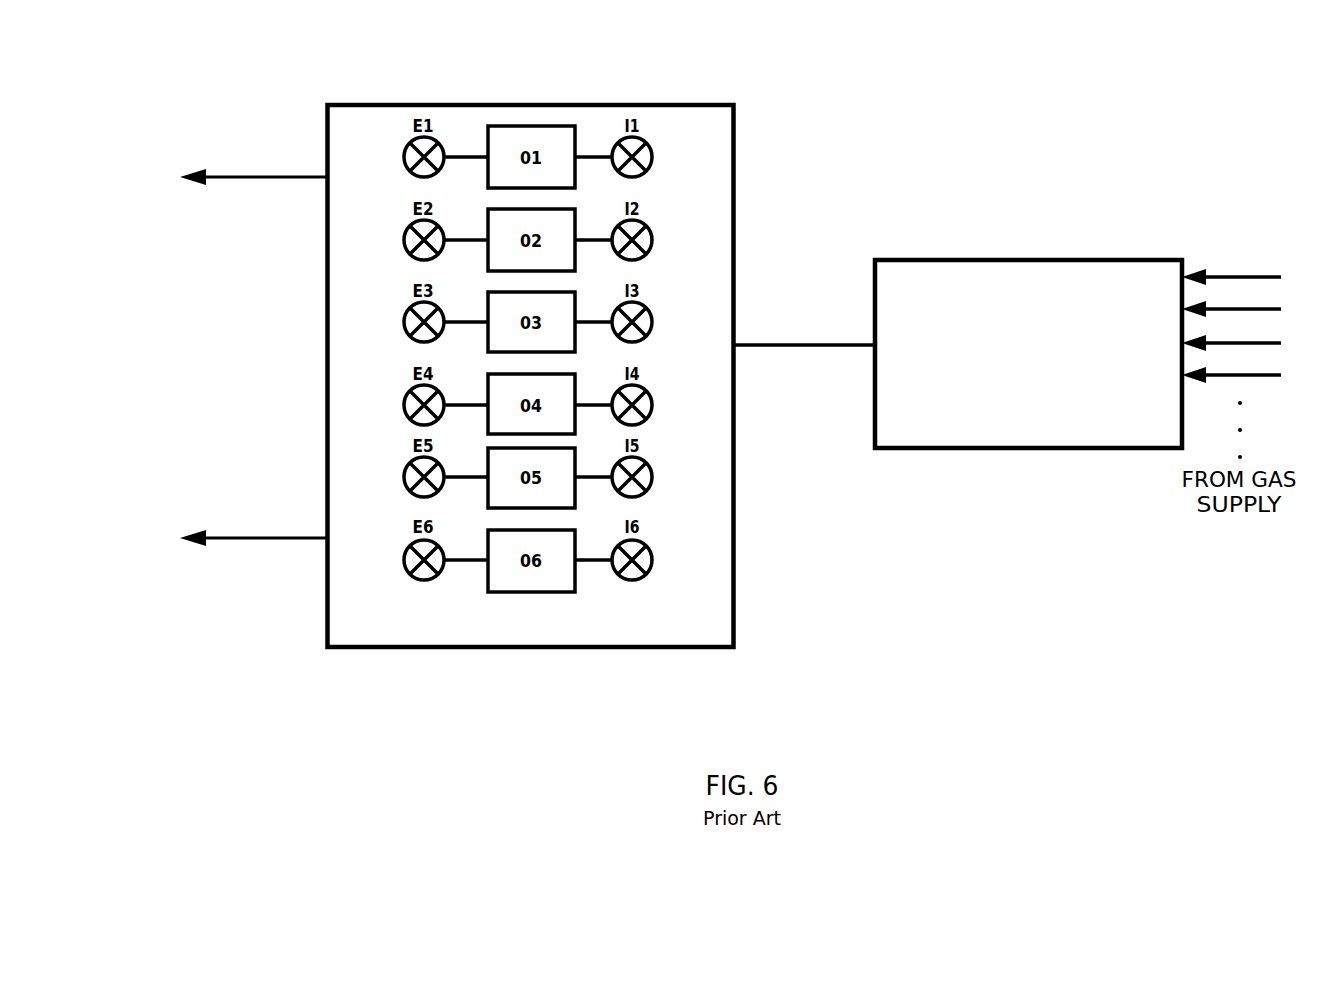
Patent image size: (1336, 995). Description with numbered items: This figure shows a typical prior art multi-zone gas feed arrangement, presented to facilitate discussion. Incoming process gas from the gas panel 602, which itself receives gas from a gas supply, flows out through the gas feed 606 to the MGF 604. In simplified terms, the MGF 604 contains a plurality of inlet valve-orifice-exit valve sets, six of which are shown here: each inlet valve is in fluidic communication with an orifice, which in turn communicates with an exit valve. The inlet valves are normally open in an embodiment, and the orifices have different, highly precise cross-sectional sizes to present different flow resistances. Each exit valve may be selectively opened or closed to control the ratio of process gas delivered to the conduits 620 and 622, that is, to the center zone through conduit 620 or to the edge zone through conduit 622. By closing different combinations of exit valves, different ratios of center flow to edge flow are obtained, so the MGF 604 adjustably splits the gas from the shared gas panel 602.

The MGF 604 is at (687, 103).
The gas feed 606 is at (818, 344).
The gas panel 602 is at (1163, 260).
The conduit 620 is at (253, 119).
The conduit 622 is at (253, 487).